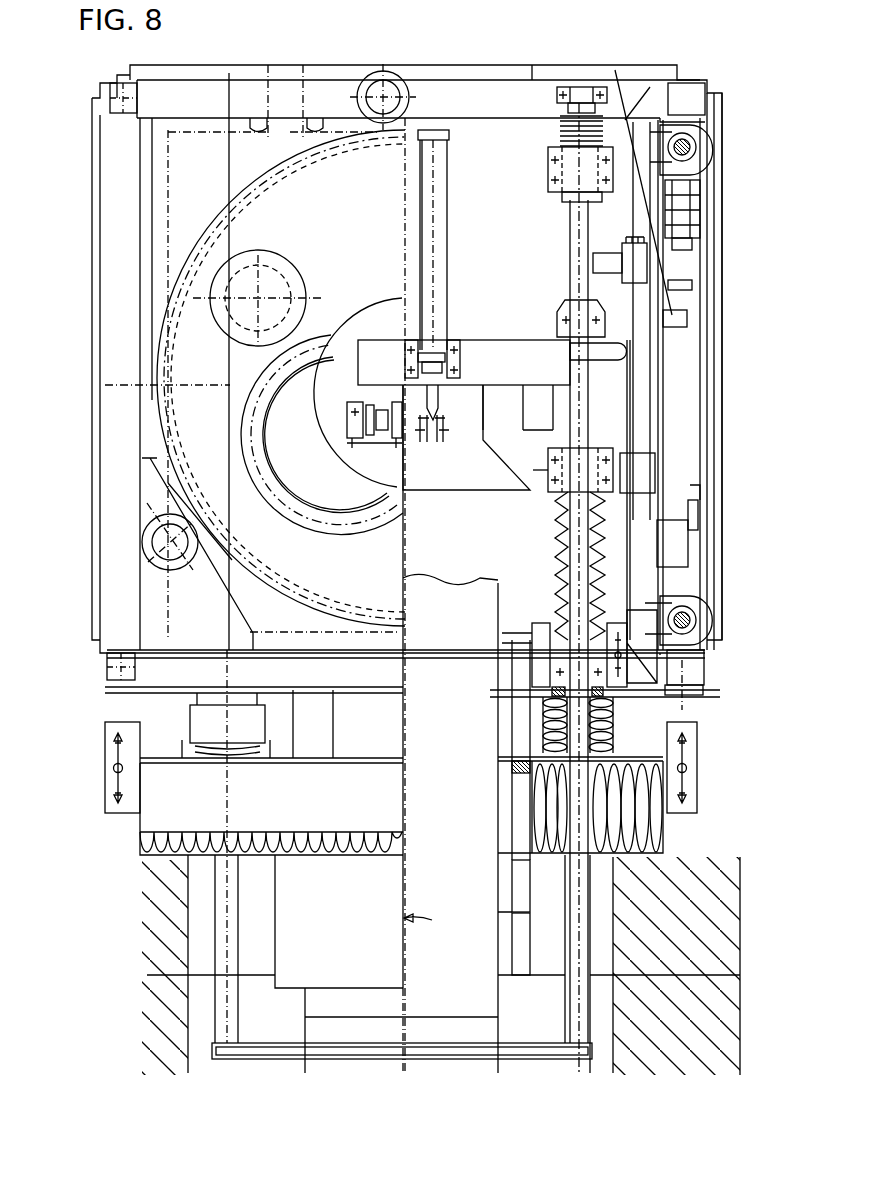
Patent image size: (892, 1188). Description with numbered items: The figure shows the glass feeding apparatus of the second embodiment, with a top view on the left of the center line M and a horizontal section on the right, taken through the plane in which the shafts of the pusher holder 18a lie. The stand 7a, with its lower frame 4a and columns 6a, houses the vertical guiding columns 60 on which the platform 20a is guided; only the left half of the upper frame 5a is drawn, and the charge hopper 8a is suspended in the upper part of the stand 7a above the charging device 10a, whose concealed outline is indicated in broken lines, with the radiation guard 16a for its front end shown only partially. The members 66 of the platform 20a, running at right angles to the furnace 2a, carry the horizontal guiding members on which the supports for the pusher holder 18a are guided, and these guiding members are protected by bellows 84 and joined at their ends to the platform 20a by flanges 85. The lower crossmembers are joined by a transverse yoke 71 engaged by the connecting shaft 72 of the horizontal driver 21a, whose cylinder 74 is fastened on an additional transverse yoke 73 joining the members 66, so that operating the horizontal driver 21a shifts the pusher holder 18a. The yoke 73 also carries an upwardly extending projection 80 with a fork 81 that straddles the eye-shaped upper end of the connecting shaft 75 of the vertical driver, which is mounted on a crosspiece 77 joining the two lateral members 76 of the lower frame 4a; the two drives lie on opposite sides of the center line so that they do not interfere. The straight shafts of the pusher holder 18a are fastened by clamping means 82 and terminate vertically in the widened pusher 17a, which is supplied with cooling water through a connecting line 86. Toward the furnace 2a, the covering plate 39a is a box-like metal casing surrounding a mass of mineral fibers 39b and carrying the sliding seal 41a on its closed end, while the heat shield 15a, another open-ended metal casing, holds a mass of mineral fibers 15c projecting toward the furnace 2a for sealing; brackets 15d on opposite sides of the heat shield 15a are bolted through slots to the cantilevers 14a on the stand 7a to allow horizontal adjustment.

The glass melting furnace 2a is at (710, 920).
The lower frame 4a is at (662, 100).
The upper frame 5a is at (112, 607).
The column 6a is at (688, 92).
The stand 7a is at (76, 346).
The charge hopper 8a is at (197, 426).
The charging device 10a is at (455, 997).
The cantilever 14a is at (115, 707).
The heat shield 15a is at (163, 813).
The mass of mineral fibers 15c is at (632, 840).
The bracket 15d is at (123, 803).
The radiation guard 16a is at (292, 963).
The pusher 17a is at (335, 1055).
The pusher holder 18a is at (222, 935).
The platform 20a is at (465, 97).
The horizontal driver 21a is at (448, 230).
The covering plate 39a is at (203, 728).
The mass of mineral fibers 39b is at (603, 733).
The sliding seal 41a is at (552, 690).
The vertical guiding column 60 is at (700, 137).
The member 66 is at (645, 210).
The transverse yoke 71 is at (462, 490).
The connecting shaft 72 is at (480, 352).
The transverse yoke 73 is at (526, 352).
The cylinder 74 is at (440, 184).
The connecting shaft 75 is at (370, 450).
The lateral member 76 is at (697, 363).
The crosspiece 77 is at (660, 462).
The projection 80 is at (386, 345).
The fork 81 is at (345, 400).
The clamping means 82 is at (557, 168).
The bellows 84 is at (548, 132).
The flange 85 is at (587, 93).
The connecting line 86 is at (613, 362).